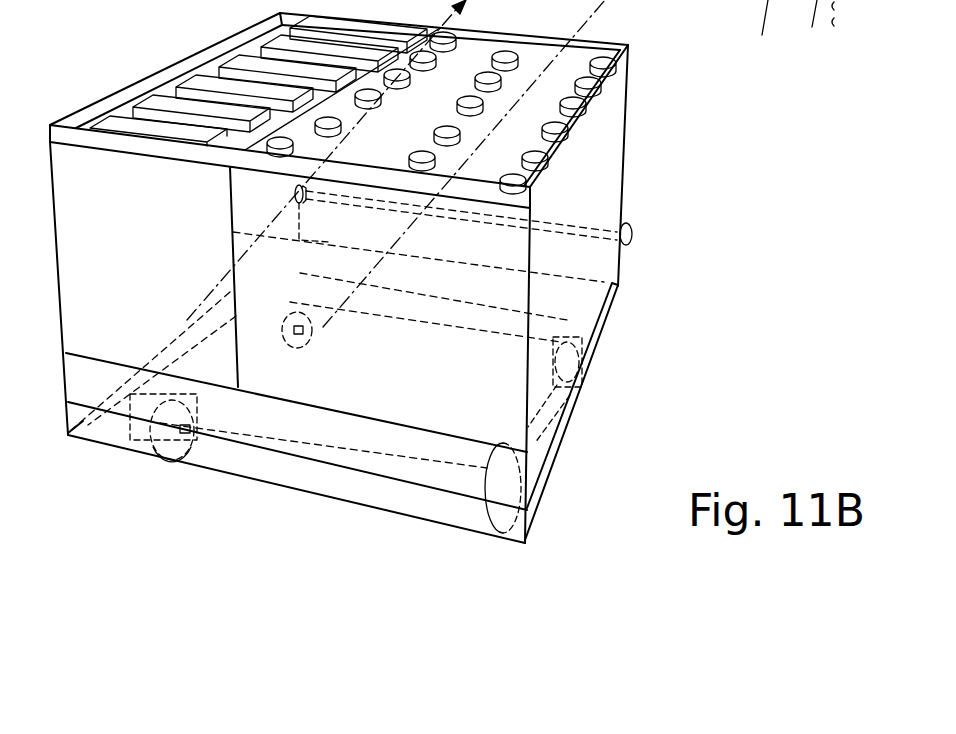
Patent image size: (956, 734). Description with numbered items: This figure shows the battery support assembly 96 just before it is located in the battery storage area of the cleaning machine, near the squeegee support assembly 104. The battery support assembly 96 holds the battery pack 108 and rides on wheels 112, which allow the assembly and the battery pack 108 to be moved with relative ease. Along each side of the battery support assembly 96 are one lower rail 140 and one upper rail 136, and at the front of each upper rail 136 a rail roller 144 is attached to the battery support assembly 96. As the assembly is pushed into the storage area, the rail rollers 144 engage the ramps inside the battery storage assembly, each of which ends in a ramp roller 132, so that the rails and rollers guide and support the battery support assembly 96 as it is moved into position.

The battery support assembly 96 is at (310, 492).
The squeegee support assembly 104 is at (519, 0).
The battery pack 108 is at (222, 60).
The wheels 112 is at (163, 463).
The ramp roller 132 is at (490, 0).
The upper rail 136 is at (226, 292).
The lower rail 140 is at (84, 420).
The rail roller 144 is at (294, 198).